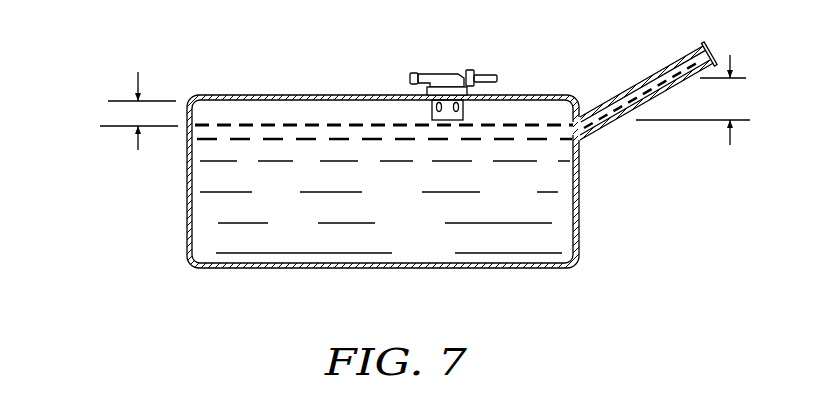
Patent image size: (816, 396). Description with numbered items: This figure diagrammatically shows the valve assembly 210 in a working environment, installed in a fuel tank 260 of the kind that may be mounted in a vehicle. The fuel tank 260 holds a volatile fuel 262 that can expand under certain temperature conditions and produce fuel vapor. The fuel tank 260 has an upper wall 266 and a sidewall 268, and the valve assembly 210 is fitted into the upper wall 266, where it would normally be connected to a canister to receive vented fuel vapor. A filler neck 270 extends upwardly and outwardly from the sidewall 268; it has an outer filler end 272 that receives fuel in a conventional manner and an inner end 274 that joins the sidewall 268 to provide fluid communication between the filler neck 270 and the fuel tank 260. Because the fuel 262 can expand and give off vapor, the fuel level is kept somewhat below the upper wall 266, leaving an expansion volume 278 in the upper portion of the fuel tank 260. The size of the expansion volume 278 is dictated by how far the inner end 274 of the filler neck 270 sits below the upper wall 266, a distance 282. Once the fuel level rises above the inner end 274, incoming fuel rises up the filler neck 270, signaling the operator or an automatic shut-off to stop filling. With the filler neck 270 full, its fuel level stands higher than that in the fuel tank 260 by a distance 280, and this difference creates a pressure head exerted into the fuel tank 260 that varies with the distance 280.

The valve assembly 210 is at (454, 67).
The fuel tank 260 is at (168, 247).
The volatile fuel 262 is at (253, 241).
The upper wall 266 is at (288, 95).
The sidewall 268 is at (583, 224).
The filler neck 270 is at (614, 97).
The outer filler end 272 is at (698, 44).
The inner end 274 is at (566, 140).
The expansion volume 278 is at (357, 108).
The difference in fuel levels 280 is at (696, 116).
The distance 282 is at (139, 127).